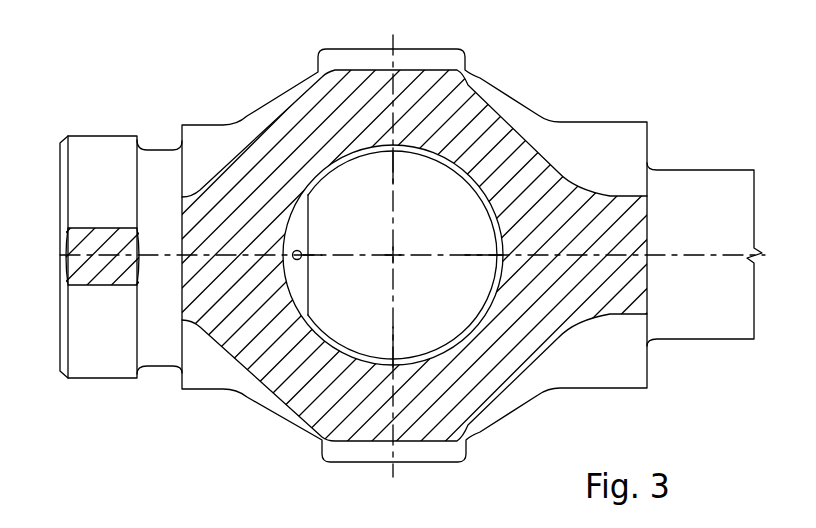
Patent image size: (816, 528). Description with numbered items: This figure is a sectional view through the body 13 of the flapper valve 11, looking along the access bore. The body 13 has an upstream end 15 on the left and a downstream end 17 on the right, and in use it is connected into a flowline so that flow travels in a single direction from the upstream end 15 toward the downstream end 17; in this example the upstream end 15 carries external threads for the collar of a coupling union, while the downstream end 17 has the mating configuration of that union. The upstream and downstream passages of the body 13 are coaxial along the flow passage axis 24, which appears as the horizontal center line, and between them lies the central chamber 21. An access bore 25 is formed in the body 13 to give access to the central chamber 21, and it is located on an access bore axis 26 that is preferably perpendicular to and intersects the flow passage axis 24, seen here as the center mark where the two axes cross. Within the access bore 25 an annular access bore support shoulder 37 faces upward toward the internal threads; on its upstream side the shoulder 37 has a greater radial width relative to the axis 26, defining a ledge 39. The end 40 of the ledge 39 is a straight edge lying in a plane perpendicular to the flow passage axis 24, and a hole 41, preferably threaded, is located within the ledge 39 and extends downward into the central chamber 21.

The flapper valve 11 is at (590, 65).
The body 13 is at (497, 73).
The upstream end 15 is at (97, 380).
The downstream end 17 is at (680, 170).
The central chamber 21 is at (443, 305).
The flow passage axis 24 is at (677, 256).
The access bore 25 is at (473, 180).
The access bore axis 26 is at (389, 250).
The access bore support shoulder 37 is at (492, 212).
The ledge 39 is at (297, 228).
The end of ledge 40 is at (310, 215).
The hole 41 is at (300, 262).